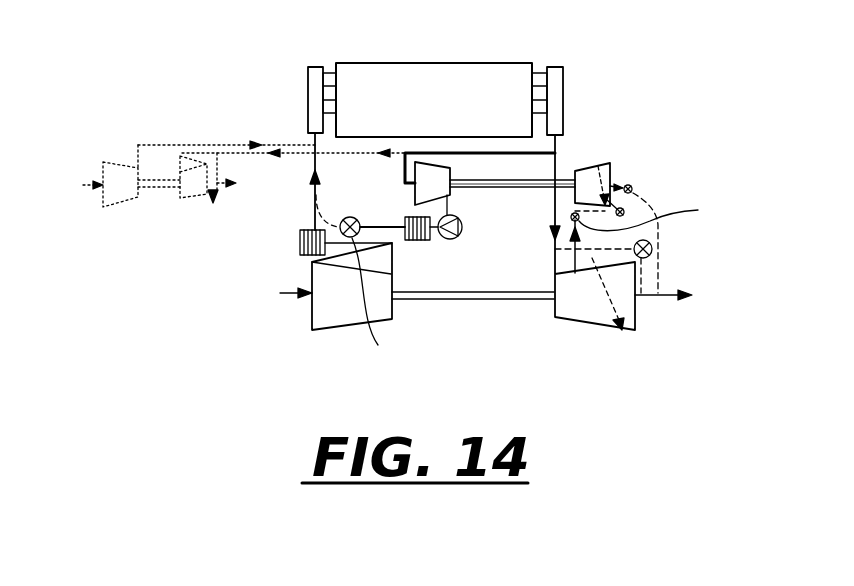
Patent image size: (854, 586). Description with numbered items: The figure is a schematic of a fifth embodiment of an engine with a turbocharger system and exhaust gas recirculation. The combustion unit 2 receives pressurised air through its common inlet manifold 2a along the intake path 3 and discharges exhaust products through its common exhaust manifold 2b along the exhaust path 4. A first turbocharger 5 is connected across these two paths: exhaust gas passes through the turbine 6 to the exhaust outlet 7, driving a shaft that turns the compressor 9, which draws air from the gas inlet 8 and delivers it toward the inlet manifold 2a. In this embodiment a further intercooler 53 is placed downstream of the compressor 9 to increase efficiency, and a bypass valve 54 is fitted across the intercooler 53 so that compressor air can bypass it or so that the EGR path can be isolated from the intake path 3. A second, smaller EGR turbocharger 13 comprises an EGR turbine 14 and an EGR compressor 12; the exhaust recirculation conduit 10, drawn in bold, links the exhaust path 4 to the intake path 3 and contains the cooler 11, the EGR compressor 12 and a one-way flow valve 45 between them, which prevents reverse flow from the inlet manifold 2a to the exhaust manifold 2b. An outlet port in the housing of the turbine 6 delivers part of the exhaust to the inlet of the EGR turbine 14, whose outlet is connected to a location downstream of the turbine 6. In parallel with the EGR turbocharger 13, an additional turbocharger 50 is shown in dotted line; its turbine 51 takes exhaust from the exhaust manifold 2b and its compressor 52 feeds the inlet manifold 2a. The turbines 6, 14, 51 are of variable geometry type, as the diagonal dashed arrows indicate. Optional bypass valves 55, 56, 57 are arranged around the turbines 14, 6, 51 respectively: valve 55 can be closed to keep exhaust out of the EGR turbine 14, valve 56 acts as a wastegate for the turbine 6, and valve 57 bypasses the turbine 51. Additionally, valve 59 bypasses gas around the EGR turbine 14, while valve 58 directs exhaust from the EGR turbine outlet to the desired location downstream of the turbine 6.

The combustion unit 2 is at (488, 70).
The inlet manifold 2a is at (312, 75).
The exhaust manifold 2b is at (560, 85).
The intake path 3 is at (310, 190).
The exhaust path 4 is at (558, 163).
The turbocharger 5 is at (497, 322).
The turbine 6 is at (645, 332).
The exhaust outlet 7 is at (684, 300).
The gas inlet 8 is at (298, 299).
The compressor 9 is at (340, 325).
The exhaust recirculation conduit 10 is at (360, 216).
The cooler 11 is at (410, 242).
The EGR compressor 12 is at (414, 193).
The EGR turbocharger 13 is at (505, 189).
The EGR turbine 14 is at (593, 172).
The one-way flow valve 45 is at (455, 240).
The additional turbocharger 50 is at (244, 198).
The turbine 51 is at (197, 202).
The compressor 52 is at (125, 166).
The intercooler 53 is at (300, 250).
The bypass valve 54 is at (378, 345).
The bypass valve 55 is at (649, 210).
The bypass valve 56 is at (652, 249).
The bypass valve 57 is at (218, 165).
The valve 58 is at (631, 184).
The valve 59 is at (624, 209).